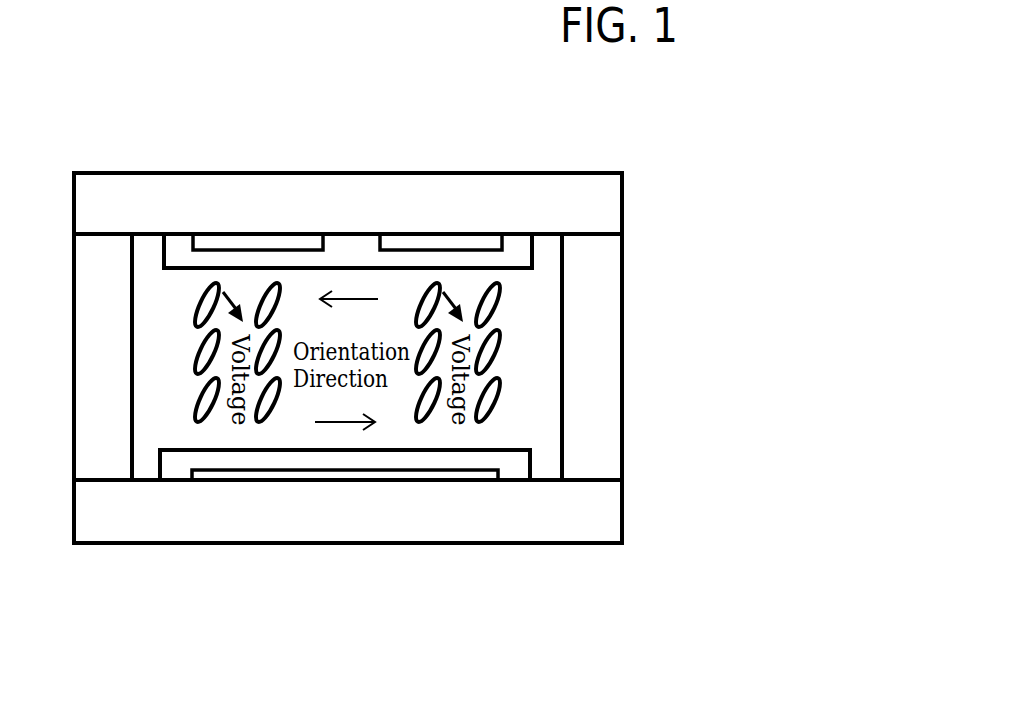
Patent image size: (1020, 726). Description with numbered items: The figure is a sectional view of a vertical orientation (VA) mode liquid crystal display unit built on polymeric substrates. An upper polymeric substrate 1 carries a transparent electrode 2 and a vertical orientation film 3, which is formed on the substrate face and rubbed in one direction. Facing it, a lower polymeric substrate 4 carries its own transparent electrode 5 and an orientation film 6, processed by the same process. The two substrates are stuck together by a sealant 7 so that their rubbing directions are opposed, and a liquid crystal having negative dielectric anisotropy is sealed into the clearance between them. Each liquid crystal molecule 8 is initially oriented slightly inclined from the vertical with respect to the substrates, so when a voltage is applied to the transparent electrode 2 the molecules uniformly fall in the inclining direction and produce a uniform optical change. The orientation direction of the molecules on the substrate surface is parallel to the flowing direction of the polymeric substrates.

The polymeric substrate 1 is at (172, 207).
The transparent electrode 2 is at (276, 240).
The vertical orientation film 3 is at (345, 258).
The polymeric substrate 4 is at (215, 515).
The transparent electrode 5 is at (474, 478).
The orientation film 6 is at (352, 460).
The sealant 7 is at (572, 337).
The liquid crystal molecule 8 is at (495, 400).